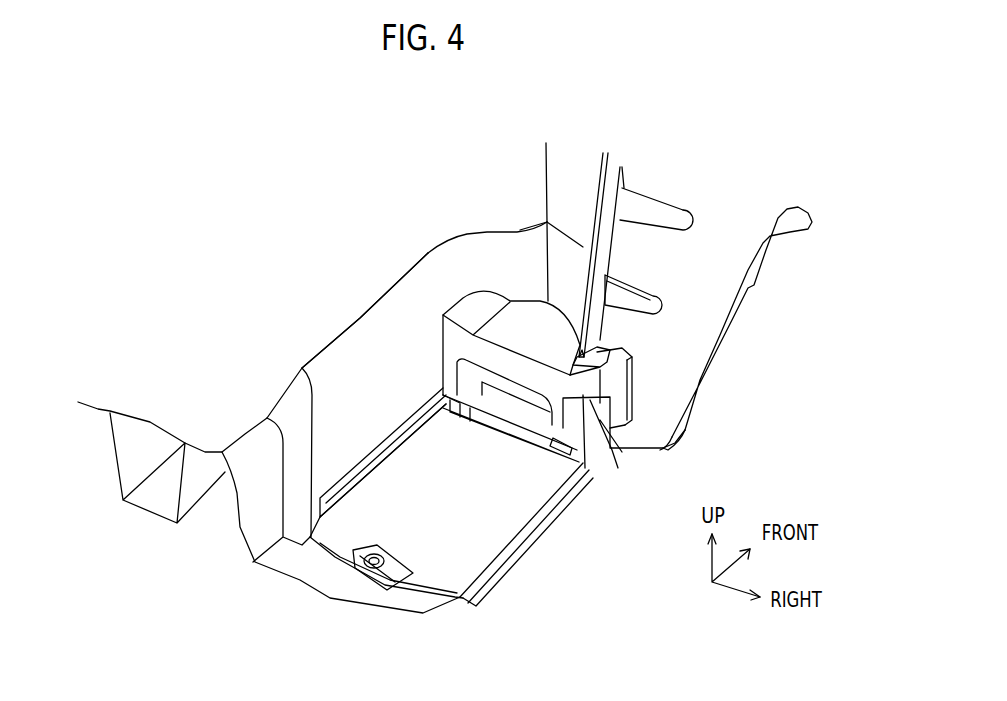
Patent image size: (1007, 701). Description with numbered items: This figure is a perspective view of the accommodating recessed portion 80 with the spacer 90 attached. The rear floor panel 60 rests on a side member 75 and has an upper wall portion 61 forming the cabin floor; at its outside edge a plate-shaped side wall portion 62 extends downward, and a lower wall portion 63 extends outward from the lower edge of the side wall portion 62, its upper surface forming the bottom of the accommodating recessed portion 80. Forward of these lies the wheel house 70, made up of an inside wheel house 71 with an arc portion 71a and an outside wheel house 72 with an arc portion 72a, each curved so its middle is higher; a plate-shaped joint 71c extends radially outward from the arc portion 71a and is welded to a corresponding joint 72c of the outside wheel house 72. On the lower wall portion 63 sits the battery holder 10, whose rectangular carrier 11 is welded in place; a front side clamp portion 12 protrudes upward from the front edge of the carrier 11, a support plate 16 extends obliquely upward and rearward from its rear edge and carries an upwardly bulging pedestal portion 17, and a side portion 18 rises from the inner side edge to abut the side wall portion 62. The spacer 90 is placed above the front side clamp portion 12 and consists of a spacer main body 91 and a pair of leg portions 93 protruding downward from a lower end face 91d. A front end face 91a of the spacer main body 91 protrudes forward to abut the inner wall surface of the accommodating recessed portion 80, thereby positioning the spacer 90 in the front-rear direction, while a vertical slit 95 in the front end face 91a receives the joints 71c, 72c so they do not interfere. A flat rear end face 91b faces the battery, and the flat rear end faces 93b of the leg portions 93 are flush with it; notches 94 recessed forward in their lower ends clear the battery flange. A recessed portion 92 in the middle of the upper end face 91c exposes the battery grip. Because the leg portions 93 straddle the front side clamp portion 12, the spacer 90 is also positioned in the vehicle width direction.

The battery holder 10 is at (451, 497).
The carrier 11 is at (468, 528).
The front side clamp portion 12 is at (490, 402).
The support plate 16 is at (427, 587).
The pedestal portion 17 is at (377, 550).
The side portion 18 is at (386, 460).
The rear floor panel 60 is at (307, 407).
The upper wall portion 61 is at (252, 342).
The side wall portion 62 is at (435, 275).
The lower wall portion 63 is at (592, 478).
The wheel house 70 is at (639, 277).
The inside wheel house 71 is at (533, 231).
The arc portion 71a is at (545, 248).
The joint 71c is at (596, 172).
The outside wheel house 72 is at (706, 298).
The arc portion 72a is at (636, 258).
The joint 72c is at (622, 172).
The side member 75 is at (120, 468).
The accommodating recessed portion 80 is at (350, 301).
The spacer 90 is at (564, 353).
The spacer main body 91 is at (619, 370).
The front end face 91a is at (545, 298).
The rear end face 91b is at (499, 366).
The upper end face 91c is at (653, 355).
The lower end face 91d is at (640, 410).
The recessed portion 92 is at (558, 368).
The leg portions 93 is at (590, 442).
The rear end faces 93b is at (443, 375).
The notches 94 is at (559, 445).
The slit 95 is at (592, 350).